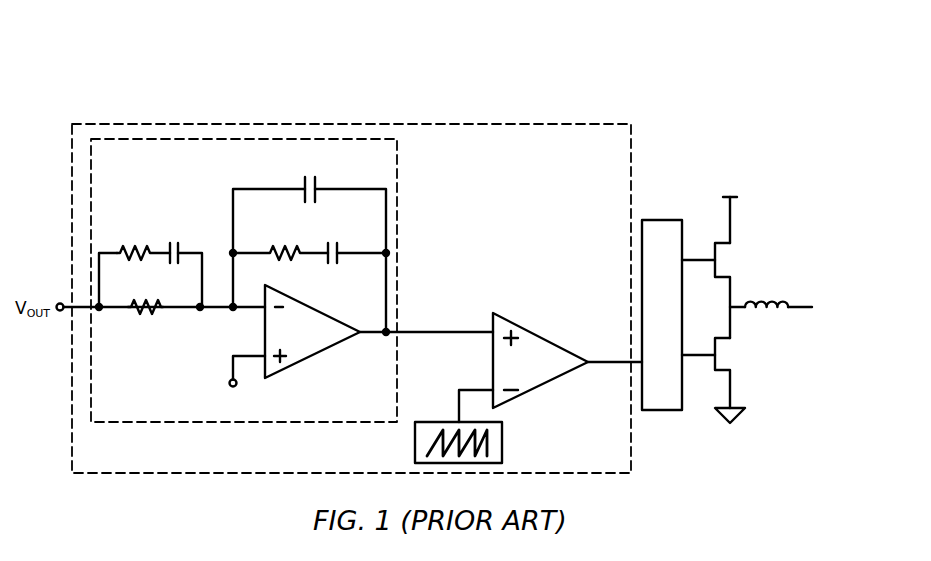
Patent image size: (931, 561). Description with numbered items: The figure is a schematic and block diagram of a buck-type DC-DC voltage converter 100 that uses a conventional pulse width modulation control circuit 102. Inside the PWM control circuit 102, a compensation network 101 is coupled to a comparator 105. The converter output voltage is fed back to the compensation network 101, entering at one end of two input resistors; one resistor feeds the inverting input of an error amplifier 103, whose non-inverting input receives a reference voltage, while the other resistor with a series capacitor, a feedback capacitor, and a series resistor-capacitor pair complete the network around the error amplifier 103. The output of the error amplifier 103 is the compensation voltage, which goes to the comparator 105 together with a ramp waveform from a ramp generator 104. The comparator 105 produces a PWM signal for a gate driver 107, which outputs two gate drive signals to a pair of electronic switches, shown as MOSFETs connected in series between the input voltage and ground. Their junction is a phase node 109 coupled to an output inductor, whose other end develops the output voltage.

The DC-DC voltage converter 100 is at (737, 297).
The compensation network 101 is at (244, 280).
The pulse width modulation control circuit 102 is at (357, 298).
The error amplifier 103 is at (305, 305).
The ramp generator 104 is at (502, 447).
The comparator 105 is at (540, 354).
The gate driver 107 is at (655, 220).
The phase node 109 is at (734, 309).